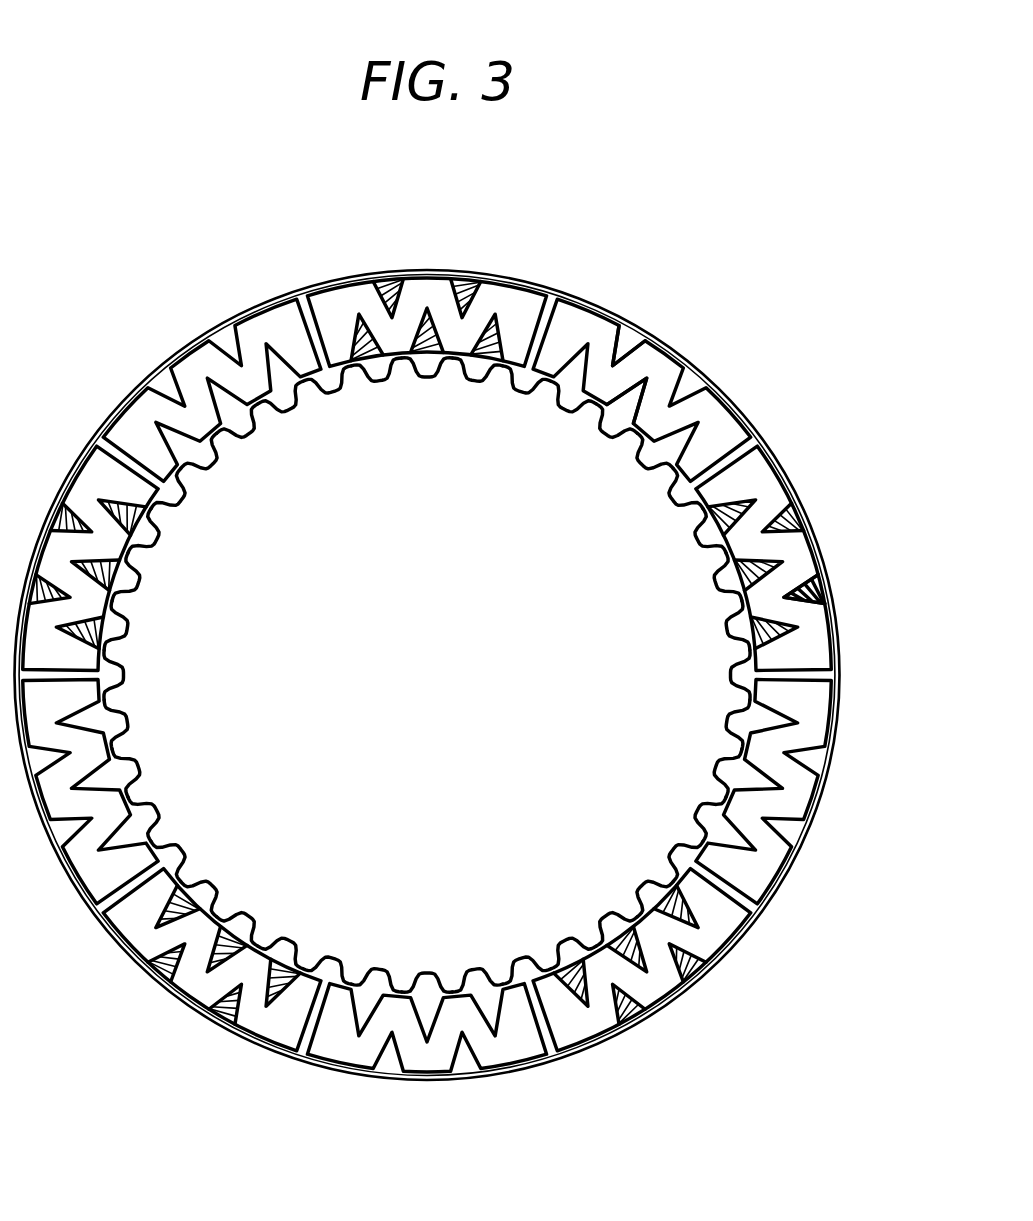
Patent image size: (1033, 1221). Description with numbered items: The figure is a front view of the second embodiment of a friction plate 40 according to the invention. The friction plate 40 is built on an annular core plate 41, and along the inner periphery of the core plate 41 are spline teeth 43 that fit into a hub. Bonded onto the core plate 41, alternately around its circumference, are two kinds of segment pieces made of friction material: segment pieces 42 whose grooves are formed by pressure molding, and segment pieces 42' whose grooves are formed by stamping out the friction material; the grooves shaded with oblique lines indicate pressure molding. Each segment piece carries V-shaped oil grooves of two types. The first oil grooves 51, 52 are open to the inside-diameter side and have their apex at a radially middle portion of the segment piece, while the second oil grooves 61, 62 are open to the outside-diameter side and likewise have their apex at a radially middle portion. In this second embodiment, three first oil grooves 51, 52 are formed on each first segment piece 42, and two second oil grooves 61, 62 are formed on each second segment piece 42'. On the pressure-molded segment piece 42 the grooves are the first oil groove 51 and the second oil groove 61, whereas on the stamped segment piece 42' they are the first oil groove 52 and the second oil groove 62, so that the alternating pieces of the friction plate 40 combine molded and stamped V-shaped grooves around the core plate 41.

The friction plate 40 is at (751, 306).
The core plate 41 is at (836, 678).
The segment piece 42 is at (804, 566).
The segment piece 42' is at (654, 390).
The spline tooth 43 is at (750, 677).
The first oil groove 51 is at (716, 520).
The first oil groove 52 is at (628, 412).
The second oil groove 61 is at (806, 522).
The second oil groove 62 is at (641, 346).